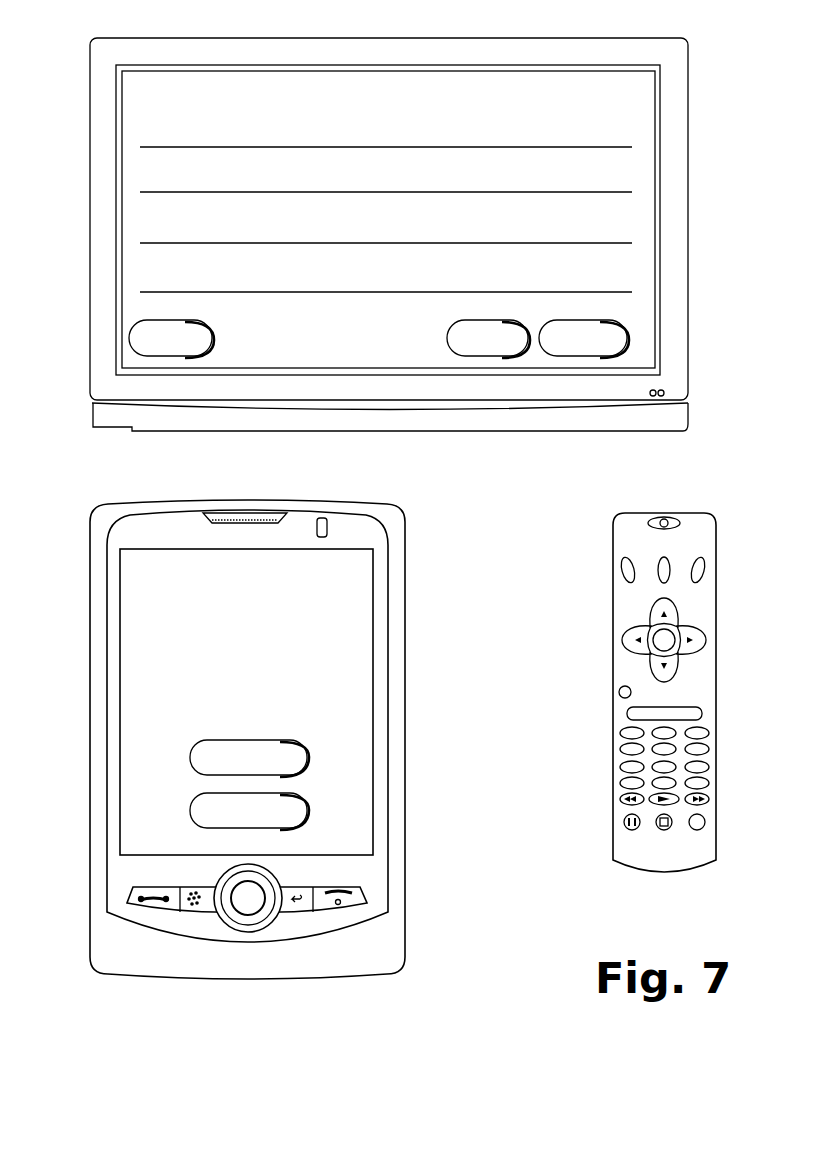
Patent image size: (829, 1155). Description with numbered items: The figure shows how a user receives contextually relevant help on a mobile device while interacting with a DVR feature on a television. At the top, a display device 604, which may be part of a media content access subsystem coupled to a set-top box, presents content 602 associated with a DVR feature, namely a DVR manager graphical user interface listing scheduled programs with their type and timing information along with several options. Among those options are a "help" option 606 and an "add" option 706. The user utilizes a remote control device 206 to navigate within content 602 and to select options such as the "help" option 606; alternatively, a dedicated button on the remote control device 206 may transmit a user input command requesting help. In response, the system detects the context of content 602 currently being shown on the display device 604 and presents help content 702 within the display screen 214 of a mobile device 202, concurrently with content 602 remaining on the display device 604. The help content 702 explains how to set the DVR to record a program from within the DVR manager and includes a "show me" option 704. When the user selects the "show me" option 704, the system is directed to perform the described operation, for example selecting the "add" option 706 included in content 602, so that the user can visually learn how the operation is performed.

The mobile device 202 is at (145, 505).
The remote control device 206 is at (668, 513).
The display screen 214 is at (120, 596).
The content 602 is at (625, 120).
The display device 604 is at (648, 38).
The help option 606 is at (212, 334).
The help content 702 is at (360, 596).
The show me option 704 is at (298, 753).
The add option 706 is at (447, 336).